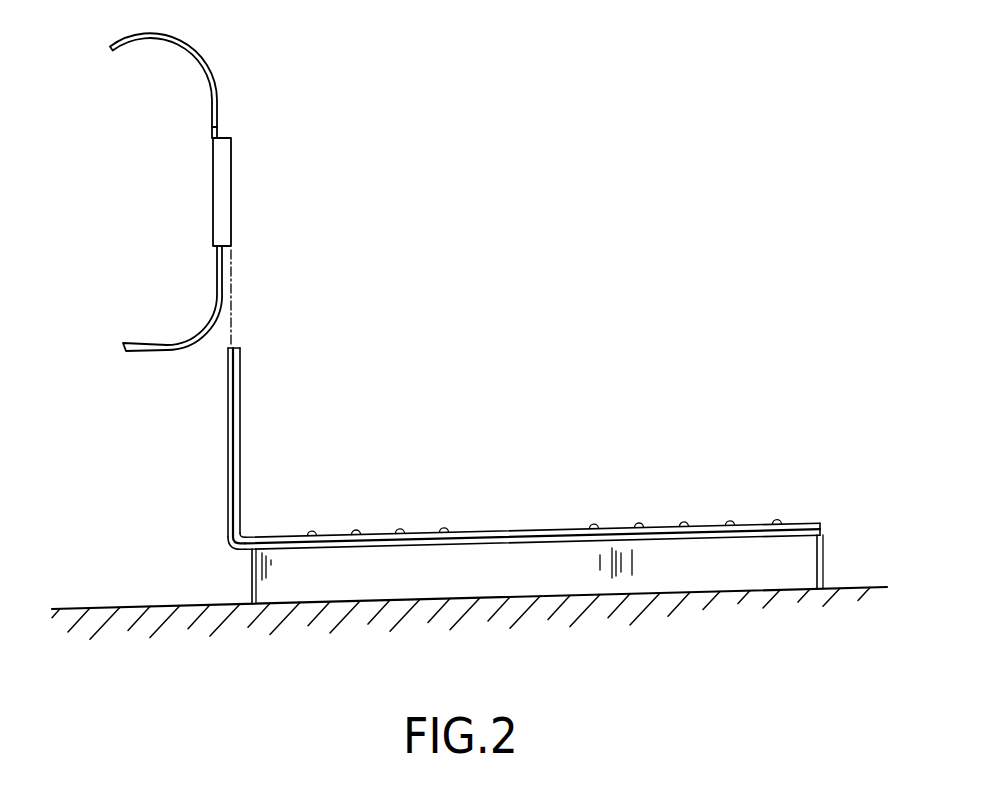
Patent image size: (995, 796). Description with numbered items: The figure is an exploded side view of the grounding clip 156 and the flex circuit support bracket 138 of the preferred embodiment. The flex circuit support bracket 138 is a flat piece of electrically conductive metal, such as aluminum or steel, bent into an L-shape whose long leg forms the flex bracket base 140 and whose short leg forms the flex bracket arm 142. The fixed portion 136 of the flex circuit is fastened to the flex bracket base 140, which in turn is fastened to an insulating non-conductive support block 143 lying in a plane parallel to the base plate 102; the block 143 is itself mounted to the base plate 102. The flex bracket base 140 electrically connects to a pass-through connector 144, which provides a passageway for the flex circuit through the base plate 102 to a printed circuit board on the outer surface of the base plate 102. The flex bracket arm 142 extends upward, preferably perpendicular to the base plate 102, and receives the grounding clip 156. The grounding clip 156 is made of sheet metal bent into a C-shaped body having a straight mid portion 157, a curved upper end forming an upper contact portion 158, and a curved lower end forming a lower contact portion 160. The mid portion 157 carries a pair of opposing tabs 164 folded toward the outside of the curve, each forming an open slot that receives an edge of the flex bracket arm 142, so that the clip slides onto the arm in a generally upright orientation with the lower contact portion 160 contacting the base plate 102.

The base plate 102 is at (705, 610).
The fixed ribbon portion 136 is at (532, 530).
The flex circuit support bracket 138 is at (228, 545).
The flex bracket base 140 is at (462, 535).
The flex bracket arm 142 is at (235, 487).
The support block 143 is at (785, 557).
The pass-through connector 144 is at (731, 522).
The grounding clip 156 is at (146, 186).
The mid portion 157 is at (214, 127).
The upper contact portion 158 is at (141, 34).
The lower contact portion 160 is at (167, 360).
The tabs 164 is at (232, 187).